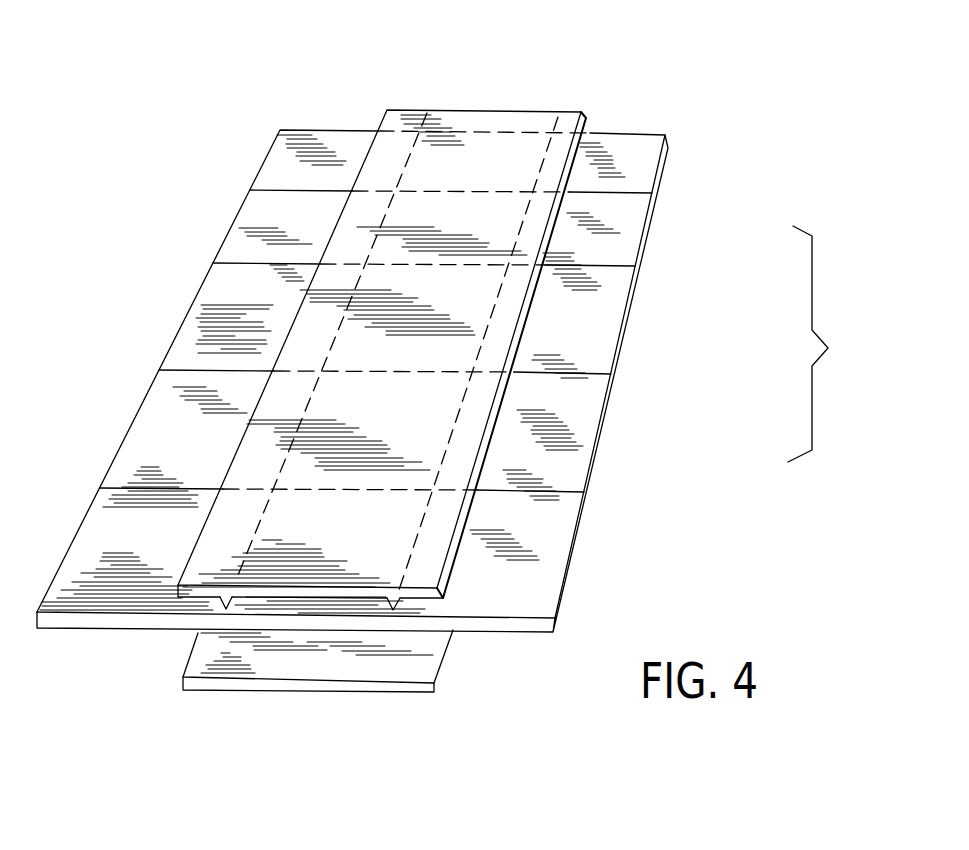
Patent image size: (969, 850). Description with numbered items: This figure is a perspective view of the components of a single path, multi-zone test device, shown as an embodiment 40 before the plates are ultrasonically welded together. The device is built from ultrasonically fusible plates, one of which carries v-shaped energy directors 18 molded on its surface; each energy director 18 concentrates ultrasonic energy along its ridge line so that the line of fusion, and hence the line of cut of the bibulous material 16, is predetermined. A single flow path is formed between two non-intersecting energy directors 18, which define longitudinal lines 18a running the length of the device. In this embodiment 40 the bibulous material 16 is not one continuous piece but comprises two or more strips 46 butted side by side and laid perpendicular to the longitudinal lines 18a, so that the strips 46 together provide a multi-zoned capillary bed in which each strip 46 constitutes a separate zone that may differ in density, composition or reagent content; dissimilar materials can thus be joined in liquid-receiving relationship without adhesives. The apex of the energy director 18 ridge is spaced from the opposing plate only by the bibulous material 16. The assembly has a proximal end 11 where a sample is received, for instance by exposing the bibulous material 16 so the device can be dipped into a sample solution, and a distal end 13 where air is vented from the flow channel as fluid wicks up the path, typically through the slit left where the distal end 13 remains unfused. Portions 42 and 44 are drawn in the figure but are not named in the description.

The proximal end 11 is at (455, 388).
The distal end 13 is at (413, 375).
The bibulous material 16 is at (830, 344).
The energy director 18 is at (393, 603).
The longitudinal lines 18a is at (542, 158).
The embodiment 40 is at (132, 211).
The upper portion of flexible circuit 42 is at (578, 110).
The lower tab portion of flexible circuit 44 is at (390, 688).
The strips 46 is at (659, 185).